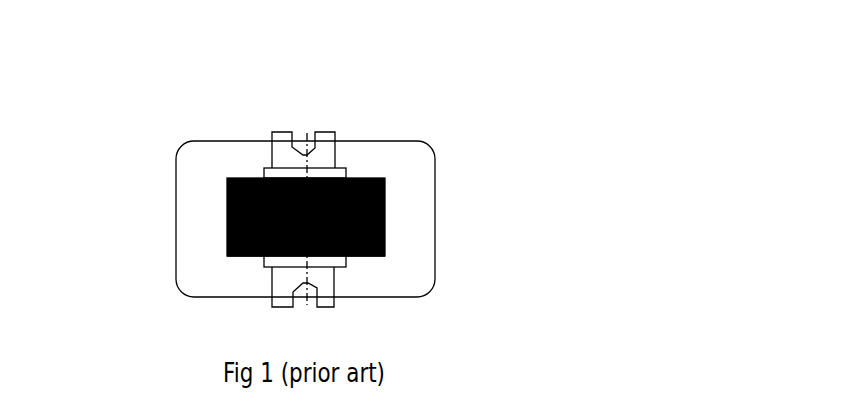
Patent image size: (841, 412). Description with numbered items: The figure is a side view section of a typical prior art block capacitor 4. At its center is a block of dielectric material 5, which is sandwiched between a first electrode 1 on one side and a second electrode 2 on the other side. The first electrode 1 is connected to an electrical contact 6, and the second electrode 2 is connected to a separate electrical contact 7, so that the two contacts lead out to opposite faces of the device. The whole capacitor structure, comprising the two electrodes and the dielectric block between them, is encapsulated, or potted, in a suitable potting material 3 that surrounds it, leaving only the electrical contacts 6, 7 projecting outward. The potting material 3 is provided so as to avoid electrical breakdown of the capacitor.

The first electrode 1 is at (235, 177).
The second electrode 2 is at (233, 257).
The potting material 3 is at (403, 227).
The block capacitor 4 is at (452, 95).
The block of dielectric material 5 is at (232, 216).
The electrical contact 6 is at (277, 133).
The electrical contact 7 is at (272, 303).